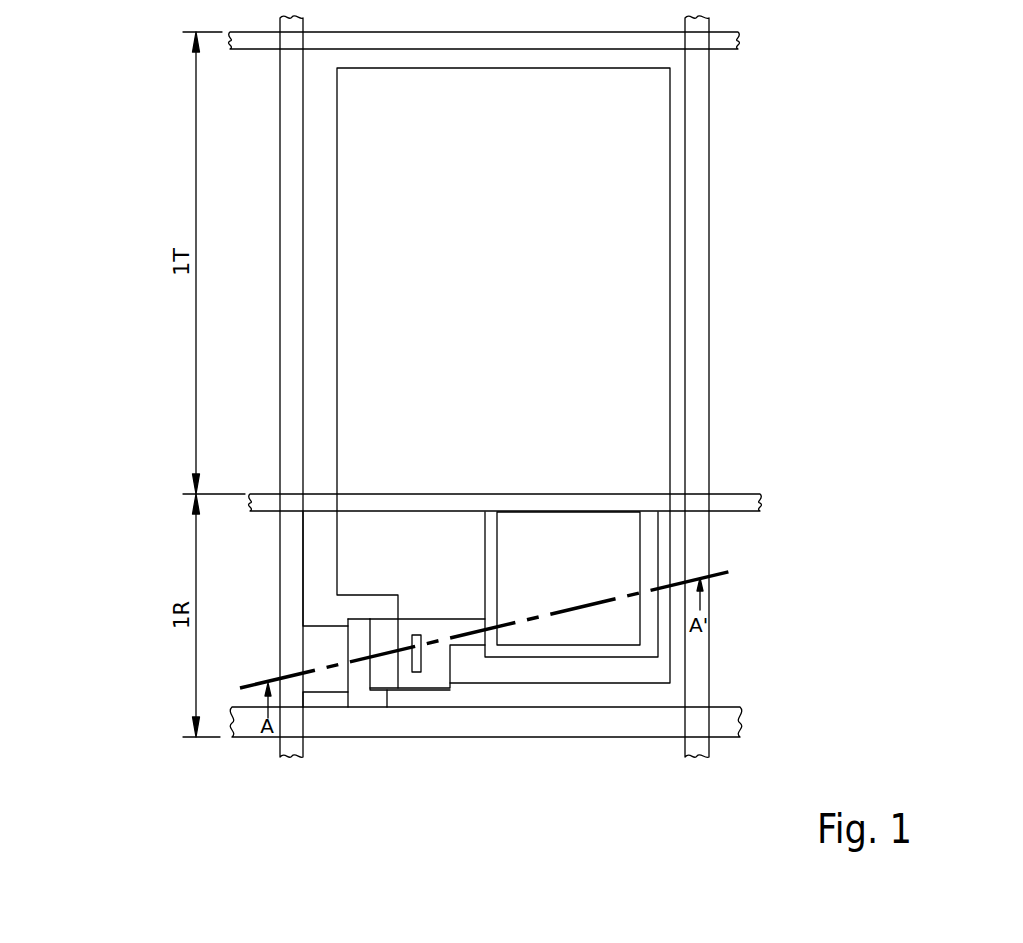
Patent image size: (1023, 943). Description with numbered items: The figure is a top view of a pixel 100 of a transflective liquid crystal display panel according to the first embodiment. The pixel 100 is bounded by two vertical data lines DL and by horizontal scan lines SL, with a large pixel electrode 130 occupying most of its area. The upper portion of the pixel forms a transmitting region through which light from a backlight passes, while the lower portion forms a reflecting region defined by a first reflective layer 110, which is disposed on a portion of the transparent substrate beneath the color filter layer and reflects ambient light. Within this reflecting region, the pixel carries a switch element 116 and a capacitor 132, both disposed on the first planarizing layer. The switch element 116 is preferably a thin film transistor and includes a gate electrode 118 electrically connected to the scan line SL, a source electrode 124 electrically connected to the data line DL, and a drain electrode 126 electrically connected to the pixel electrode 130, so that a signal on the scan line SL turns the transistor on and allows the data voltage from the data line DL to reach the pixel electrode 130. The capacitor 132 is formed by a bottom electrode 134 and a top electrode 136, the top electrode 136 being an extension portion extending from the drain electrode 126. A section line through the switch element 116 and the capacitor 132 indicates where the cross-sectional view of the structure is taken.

The pixel 100 is at (876, 130).
The data line DL is at (698, 152).
The scan line SL is at (733, 725).
The pixel electrode 130 is at (670, 377).
The first reflective layer 110 is at (673, 652).
The capacitor 132 is at (698, 578).
The bottom electrode 134 is at (640, 545).
The top electrode 136 is at (622, 532).
The switch element 116 is at (390, 743).
The source electrode 124 is at (333, 682).
The gate electrode 118 is at (362, 682).
The drain electrode 126 is at (415, 682).